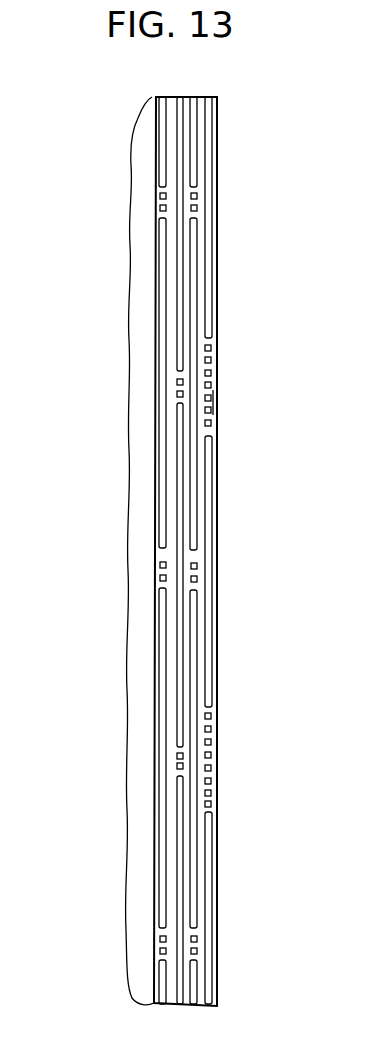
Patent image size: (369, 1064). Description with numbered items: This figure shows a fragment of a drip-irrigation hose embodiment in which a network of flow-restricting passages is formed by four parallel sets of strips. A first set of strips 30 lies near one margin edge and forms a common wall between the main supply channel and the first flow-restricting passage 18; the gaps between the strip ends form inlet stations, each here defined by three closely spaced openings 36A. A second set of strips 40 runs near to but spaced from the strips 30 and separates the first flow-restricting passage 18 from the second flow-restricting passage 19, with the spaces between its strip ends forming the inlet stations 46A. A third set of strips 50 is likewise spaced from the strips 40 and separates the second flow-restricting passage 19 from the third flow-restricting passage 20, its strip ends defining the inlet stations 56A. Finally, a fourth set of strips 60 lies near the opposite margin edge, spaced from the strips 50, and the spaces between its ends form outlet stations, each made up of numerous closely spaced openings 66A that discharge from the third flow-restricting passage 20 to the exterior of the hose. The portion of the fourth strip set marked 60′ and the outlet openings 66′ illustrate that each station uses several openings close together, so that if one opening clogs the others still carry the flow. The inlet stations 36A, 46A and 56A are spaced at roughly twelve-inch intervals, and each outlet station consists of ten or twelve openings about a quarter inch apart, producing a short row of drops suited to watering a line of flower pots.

The first flow-restricting passage 18 is at (171, 96).
The second flow-restricting passage 19 is at (188, 96).
The third flow-restricting passage 20 is at (200, 96).
The first set of strips 30 is at (160, 315).
The closely spaced openings 36A is at (147, 200).
The second set of strips 40 is at (178, 276).
The inlet stations 46A is at (164, 762).
The third set of strips 50 is at (193, 235).
The inlet stations 56A is at (203, 193).
The fourth set of strips 60 is at (208, 273).
The closely spaced openings 66A is at (230, 370).
The strip portion 60′ is at (214, 404).
The openings 66′ is at (213, 433).